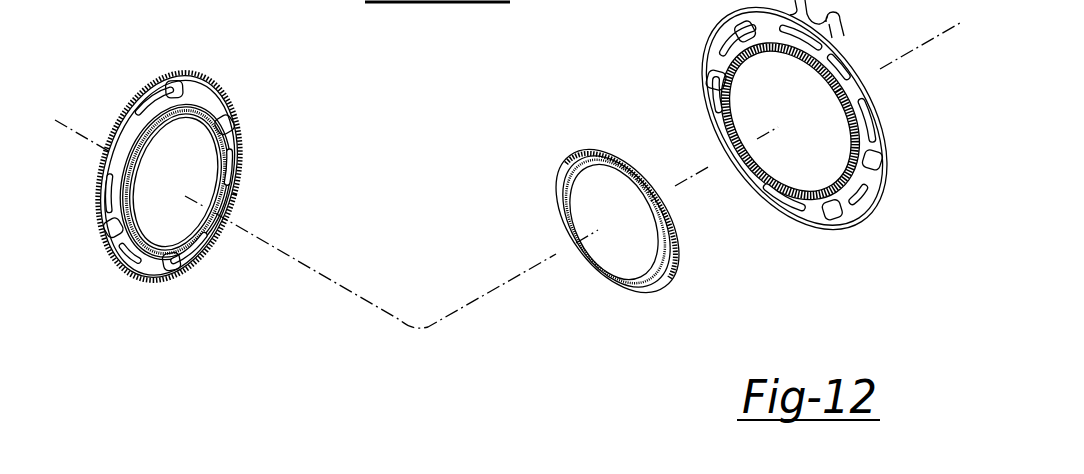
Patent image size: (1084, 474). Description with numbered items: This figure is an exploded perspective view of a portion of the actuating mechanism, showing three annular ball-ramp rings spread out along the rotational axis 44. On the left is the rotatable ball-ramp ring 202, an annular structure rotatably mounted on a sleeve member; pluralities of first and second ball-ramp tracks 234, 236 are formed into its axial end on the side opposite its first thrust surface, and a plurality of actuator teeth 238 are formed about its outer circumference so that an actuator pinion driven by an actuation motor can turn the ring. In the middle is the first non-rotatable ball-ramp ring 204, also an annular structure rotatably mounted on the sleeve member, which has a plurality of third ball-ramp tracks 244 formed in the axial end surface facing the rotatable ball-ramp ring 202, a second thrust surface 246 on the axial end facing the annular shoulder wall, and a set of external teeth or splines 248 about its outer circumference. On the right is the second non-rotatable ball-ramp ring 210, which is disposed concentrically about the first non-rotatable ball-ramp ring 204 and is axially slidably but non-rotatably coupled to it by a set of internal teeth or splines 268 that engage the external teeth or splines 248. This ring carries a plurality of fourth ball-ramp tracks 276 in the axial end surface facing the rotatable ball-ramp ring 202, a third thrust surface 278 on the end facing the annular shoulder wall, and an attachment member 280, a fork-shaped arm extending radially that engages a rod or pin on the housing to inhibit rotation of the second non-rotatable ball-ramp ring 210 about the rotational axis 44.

The rotational axis 44 is at (400, 322).
The rotatable ball-ramp ring 202 is at (118, 289).
The first non-rotatable ball-ramp ring 204 is at (651, 299).
The second non-rotatable ball-ramp ring 210 is at (690, 75).
The first ball-ramp tracks 234 is at (221, 148).
The second ball-ramp tracks 236 is at (232, 184).
The actuator teeth 238 is at (186, 90).
The third ball-ramp tracks 244 is at (630, 283).
The second thrust surface 246 is at (588, 148).
The external teeth or splines 248 is at (563, 203).
The internal teeth or splines 268 is at (780, 57).
The fourth ball-ramp tracks 276 is at (857, 207).
The third thrust surface 278 is at (877, 187).
The attachment member 280 is at (827, 28).